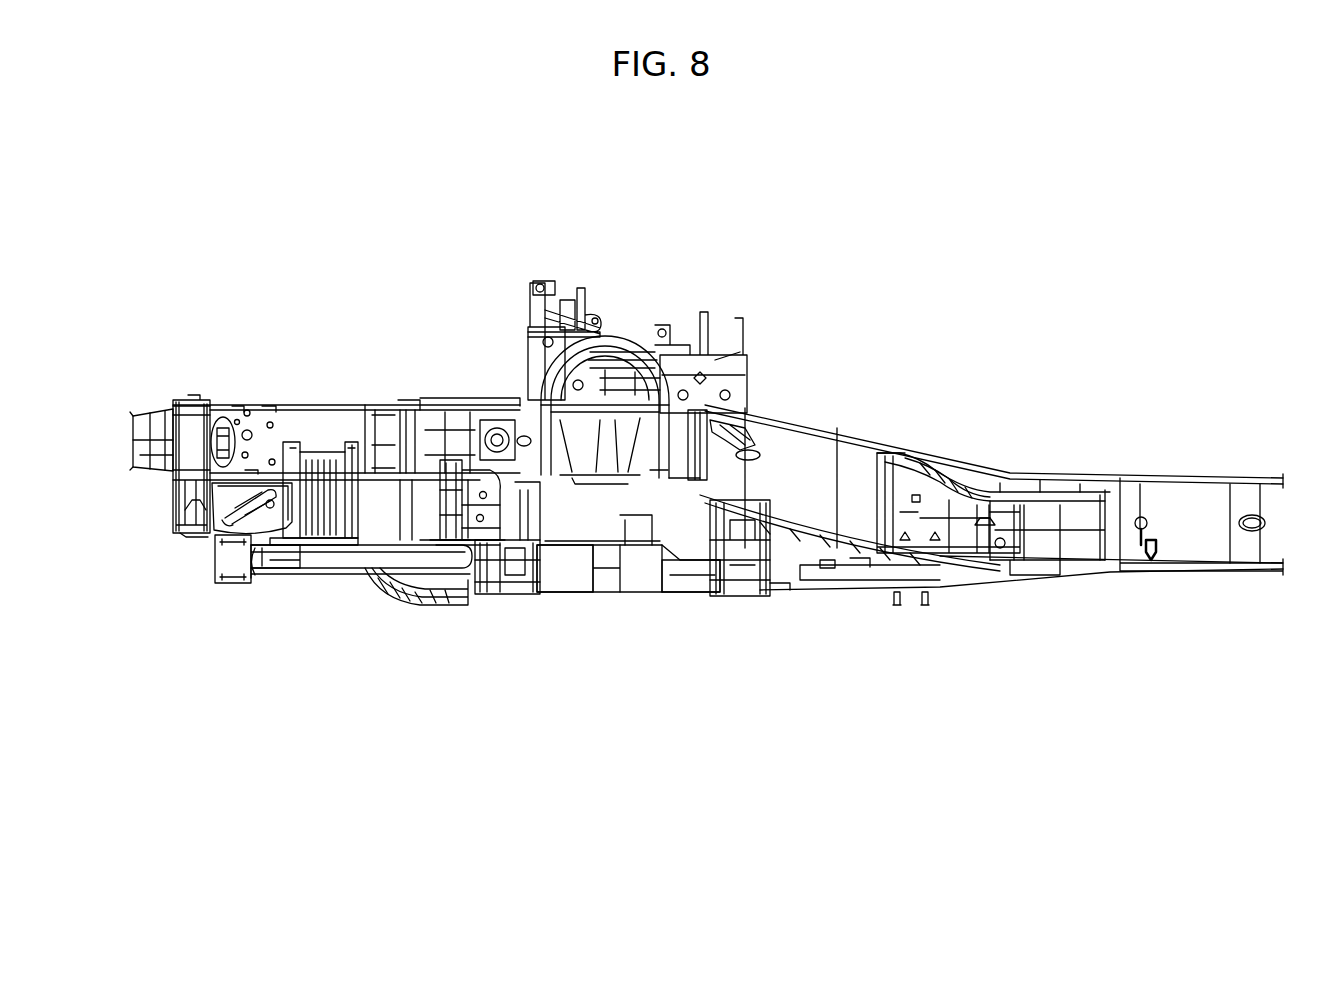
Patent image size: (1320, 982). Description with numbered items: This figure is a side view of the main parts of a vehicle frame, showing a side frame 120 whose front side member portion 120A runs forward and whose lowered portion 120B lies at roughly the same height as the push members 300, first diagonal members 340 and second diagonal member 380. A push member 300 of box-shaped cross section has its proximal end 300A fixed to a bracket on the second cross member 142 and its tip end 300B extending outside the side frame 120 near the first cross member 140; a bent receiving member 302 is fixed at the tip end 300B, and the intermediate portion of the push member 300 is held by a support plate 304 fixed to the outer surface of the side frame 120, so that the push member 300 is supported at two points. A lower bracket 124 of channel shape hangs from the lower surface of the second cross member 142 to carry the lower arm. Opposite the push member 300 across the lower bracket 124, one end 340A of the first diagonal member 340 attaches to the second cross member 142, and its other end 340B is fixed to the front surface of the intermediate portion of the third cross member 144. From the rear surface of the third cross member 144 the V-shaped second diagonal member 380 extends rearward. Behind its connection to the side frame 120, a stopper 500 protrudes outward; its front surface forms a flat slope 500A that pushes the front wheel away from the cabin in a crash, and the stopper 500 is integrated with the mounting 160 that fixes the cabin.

The side frame 120 is at (1140, 468).
The front side member portion 120A is at (820, 457).
The lowered portion of the side frame 120B is at (1218, 478).
The lower bracket 124 is at (534, 580).
The first cross member 140 is at (193, 398).
The second cross member 142 is at (462, 515).
The third cross member 144 is at (745, 598).
The mounting 160 is at (1040, 482).
The push member 300 is at (357, 565).
The proximal end of the push member 300A is at (460, 605).
The tip end of the push member 300B is at (262, 585).
The receiving member 302 is at (215, 562).
The support plate 304 is at (321, 400).
The first diagonal member 340 is at (605, 592).
The one end of the first diagonal member 340A is at (551, 578).
The other end of the first diagonal member 340B is at (700, 580).
The second diagonal member 380 is at (855, 590).
The stopper 500 is at (920, 458).
The flat slope 500A is at (895, 497).